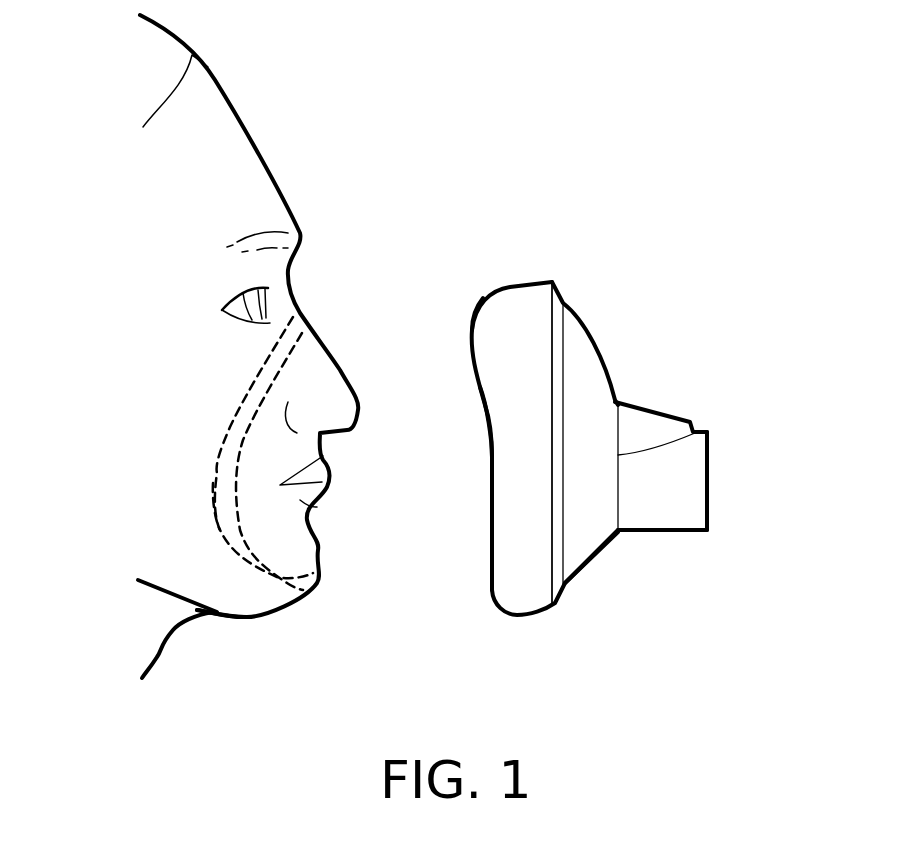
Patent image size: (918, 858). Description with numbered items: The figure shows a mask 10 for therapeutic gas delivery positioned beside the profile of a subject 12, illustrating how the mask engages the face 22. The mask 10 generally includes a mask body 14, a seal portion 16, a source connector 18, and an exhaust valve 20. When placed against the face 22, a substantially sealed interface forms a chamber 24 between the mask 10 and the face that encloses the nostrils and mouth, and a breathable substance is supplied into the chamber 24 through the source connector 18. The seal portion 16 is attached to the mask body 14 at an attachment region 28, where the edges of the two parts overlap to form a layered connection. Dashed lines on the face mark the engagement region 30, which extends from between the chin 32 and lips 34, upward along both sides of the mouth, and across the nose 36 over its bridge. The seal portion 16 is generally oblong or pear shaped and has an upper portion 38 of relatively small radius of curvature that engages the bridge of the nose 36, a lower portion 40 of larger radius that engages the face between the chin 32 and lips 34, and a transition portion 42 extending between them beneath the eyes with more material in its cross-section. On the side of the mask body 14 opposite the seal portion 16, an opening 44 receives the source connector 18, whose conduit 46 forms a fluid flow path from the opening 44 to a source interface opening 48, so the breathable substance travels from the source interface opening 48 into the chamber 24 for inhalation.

The mask 10 is at (591, 389).
The subject 12 is at (230, 127).
The mask body 14 is at (603, 347).
The seal portion 16 is at (517, 293).
The source connector 18 is at (667, 517).
The exhaust valve 20 is at (658, 427).
The face 22 is at (217, 420).
The chamber 24 is at (530, 417).
The attachment region 28 is at (558, 342).
The engagement region 30 is at (213, 487).
The chin 32 is at (267, 618).
The lips 34 is at (327, 493).
The nose 36 is at (343, 368).
The upper portion 38 is at (475, 335).
The lower portion 40 is at (508, 572).
The transition portion 42 is at (520, 410).
The opening 44 is at (618, 503).
The conduit 46 is at (653, 494).
The source interface opening 48 is at (710, 480).